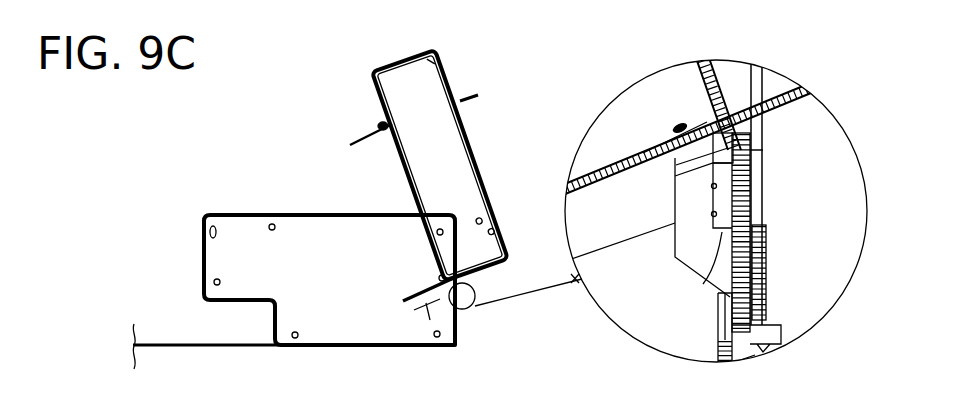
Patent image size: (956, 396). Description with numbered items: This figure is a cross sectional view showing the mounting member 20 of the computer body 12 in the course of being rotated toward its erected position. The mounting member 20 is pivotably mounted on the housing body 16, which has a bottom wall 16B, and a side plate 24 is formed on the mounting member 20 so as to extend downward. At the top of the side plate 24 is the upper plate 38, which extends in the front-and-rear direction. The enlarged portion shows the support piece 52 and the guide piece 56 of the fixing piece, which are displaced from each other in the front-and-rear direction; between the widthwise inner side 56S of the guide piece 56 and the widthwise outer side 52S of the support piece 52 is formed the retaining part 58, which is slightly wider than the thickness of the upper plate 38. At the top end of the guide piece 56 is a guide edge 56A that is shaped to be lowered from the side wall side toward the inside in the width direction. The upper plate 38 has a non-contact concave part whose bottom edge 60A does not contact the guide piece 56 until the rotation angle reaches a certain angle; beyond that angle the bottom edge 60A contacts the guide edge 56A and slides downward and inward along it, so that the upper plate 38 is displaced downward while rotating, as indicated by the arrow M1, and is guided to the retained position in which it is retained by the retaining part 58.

The computer body 12 is at (497, 131).
The housing body 16 is at (241, 346).
The bottom wall 16B is at (337, 320).
The mounting member 20 is at (478, 95).
The side plate 24 is at (598, 170).
The arrow M1 is at (703, 120).
The upper plate 38 is at (763, 128).
The bottom edge 60A is at (762, 158).
The guide edge 56A is at (676, 187).
The widthwise outer side 52S is at (676, 212).
The widthwise inner side 56S is at (760, 221).
The support piece 52 is at (685, 260).
The retaining part 58 is at (704, 285).
The guide piece 56 is at (757, 283).